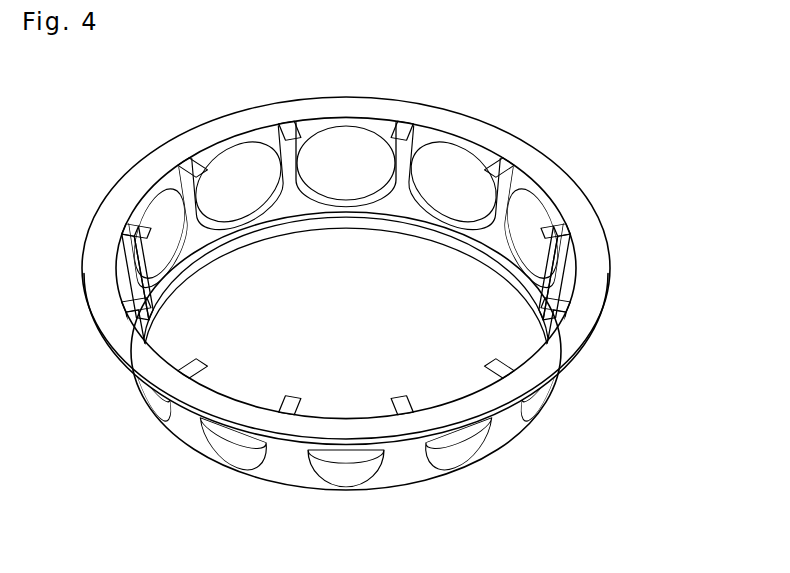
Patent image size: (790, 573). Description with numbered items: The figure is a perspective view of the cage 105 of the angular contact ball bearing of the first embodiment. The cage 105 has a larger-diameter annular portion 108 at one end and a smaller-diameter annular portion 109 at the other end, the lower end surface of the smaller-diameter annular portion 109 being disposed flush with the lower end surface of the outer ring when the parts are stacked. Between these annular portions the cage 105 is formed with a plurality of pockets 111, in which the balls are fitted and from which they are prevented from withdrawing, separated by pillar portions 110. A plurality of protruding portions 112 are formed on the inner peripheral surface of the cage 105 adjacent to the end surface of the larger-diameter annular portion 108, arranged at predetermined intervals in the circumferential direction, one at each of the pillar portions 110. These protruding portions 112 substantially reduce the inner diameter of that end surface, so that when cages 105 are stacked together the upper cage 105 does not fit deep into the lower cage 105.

The cage 105 is at (398, 265).
The larger-diameter annular portion 108 is at (458, 126).
The smaller-diameter annular portion 109 is at (334, 222).
The pillar portions 110 is at (517, 177).
The pockets 111 is at (503, 266).
The protruding portions 112 is at (392, 118).